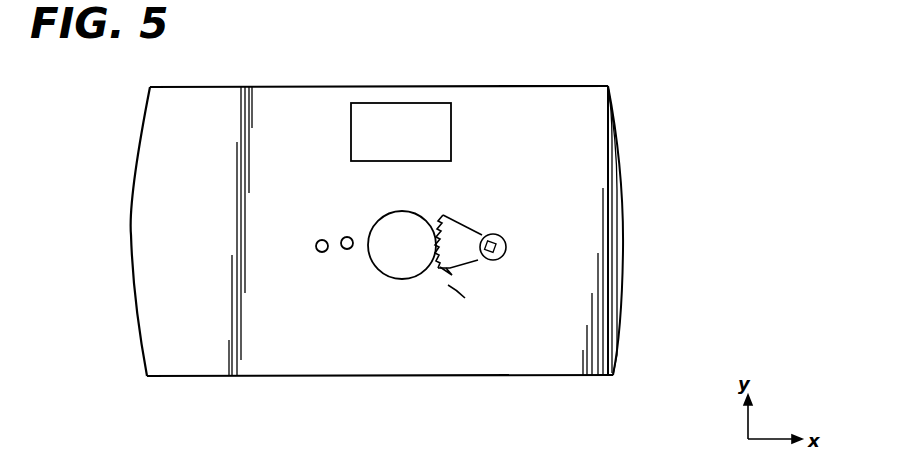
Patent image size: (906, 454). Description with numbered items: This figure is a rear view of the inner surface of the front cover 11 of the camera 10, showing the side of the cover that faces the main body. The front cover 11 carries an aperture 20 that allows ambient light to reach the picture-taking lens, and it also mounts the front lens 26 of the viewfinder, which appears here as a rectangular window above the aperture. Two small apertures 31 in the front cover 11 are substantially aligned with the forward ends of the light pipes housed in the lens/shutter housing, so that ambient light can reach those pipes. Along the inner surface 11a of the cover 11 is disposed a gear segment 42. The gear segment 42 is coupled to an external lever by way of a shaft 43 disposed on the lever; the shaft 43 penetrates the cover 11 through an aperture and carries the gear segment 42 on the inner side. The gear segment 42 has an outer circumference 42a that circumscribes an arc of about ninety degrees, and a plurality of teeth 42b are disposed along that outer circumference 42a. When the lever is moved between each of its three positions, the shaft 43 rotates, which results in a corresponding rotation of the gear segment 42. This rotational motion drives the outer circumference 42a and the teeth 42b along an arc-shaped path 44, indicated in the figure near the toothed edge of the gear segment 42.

The camera 10 is at (627, 102).
The front cover 11 is at (623, 282).
The inner surface 11a is at (610, 207).
The front lens 26 is at (424, 110).
The aperture 20 is at (383, 272).
The apertures 31 is at (345, 237).
The gear segment 42 is at (468, 235).
The outer circumference 42a is at (443, 267).
The teeth 42b is at (438, 268).
The shaft 43 is at (506, 255).
The arc-shaped path 44 is at (450, 203).